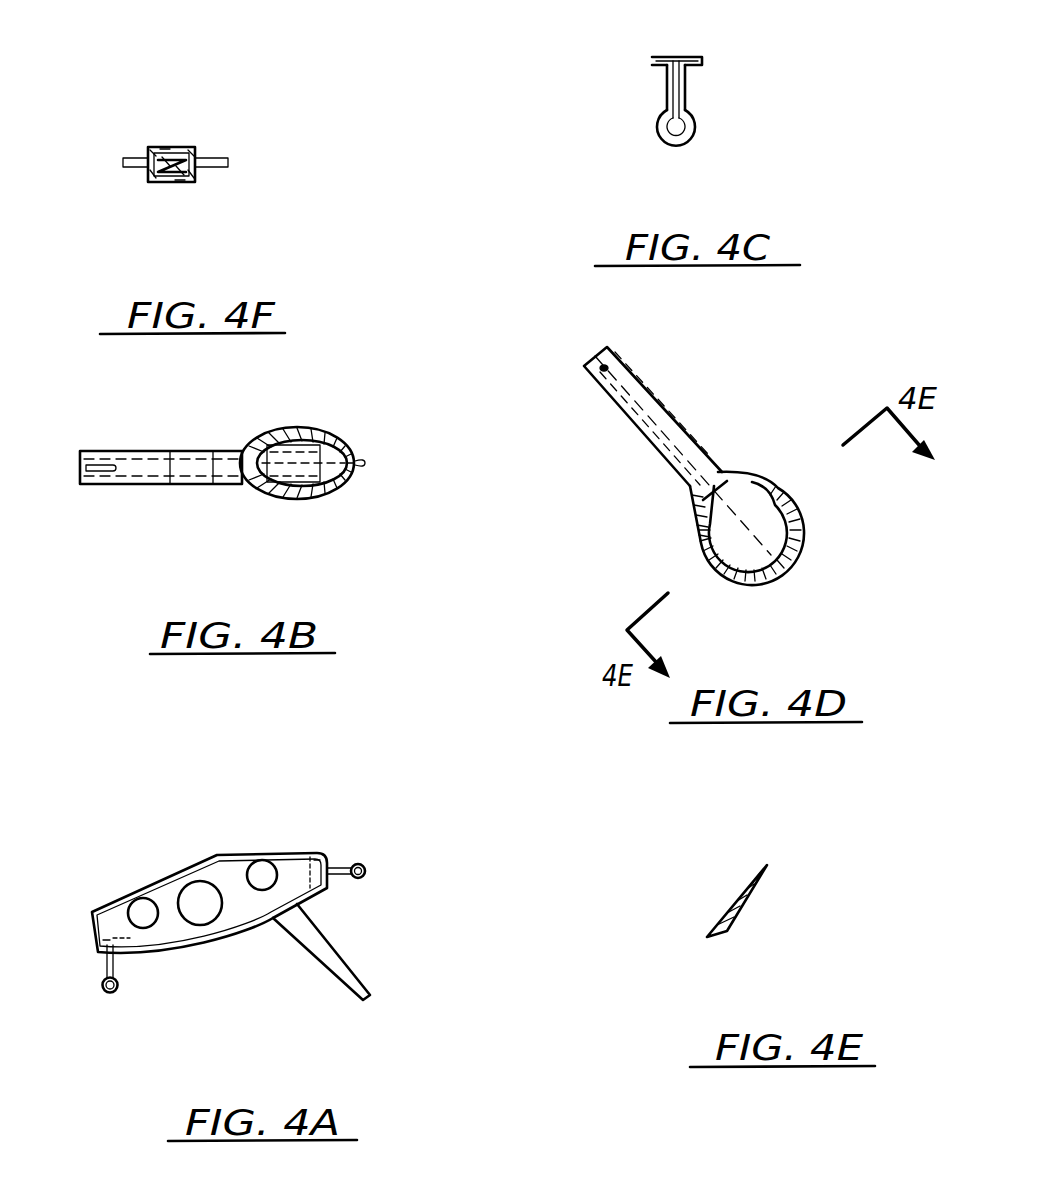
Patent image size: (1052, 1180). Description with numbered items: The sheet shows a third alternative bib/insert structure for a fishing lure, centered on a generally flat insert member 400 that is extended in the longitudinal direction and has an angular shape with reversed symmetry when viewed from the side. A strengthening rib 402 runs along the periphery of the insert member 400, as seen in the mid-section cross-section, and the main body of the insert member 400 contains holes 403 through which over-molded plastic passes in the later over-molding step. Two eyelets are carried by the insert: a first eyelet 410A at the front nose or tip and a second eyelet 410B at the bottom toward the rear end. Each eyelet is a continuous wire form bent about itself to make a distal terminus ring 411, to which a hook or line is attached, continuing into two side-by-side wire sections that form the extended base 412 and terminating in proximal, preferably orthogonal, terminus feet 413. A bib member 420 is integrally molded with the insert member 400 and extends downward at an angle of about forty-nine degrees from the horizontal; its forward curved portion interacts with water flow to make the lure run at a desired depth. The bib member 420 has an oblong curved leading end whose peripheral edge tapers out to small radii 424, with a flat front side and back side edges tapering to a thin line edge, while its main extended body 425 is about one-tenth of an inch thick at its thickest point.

In FIG. 4F, the insert member 400 is at (174, 156).
In FIG. 4D, the insert member 400 is at (715, 444).
In FIG. 4A, the insert member 400 is at (293, 907).
In FIG. 4F, the strengthening rib 402 is at (195, 148).
In FIG. 4A, the strengthening rib 402 is at (283, 855).
In FIG. 4A, the holes 403 is at (265, 880).
In FIG. 4C, the first eyelet 410A is at (656, 89).
In FIG. 4D, the first eyelet 410A is at (718, 526).
In FIG. 4A, the first eyelet 410A is at (367, 875).
In FIG. 4C, the second eyelet 410B is at (734, 89).
In FIG. 4B, the second eyelet 410B is at (103, 470).
In FIG. 4D, the second eyelet 410B is at (643, 422).
In FIG. 4A, the second eyelet 410B is at (101, 992).
In FIG. 4C, the terminus ring 411 is at (686, 141).
In FIG. 4C, the extended base 412 is at (688, 98).
In FIG. 4C, the terminus feet 413 is at (696, 57).
In FIG. 4B, the bib member 420 is at (351, 427).
In FIG. 4D, the bib member 420 is at (760, 523).
In FIG. 4A, the bib member 420 is at (336, 981).
In FIG. 4E, the bib member 420 is at (749, 913).
In FIG. 4B, the small radii 424 is at (350, 450).
In FIG. 4D, the small radii 424 is at (786, 496).
In FIG. 4A, the small radii 424 is at (363, 1000).
In FIG. 4E, the small radii 424 is at (767, 871).
In FIG. 4D, the main extended body 425 is at (778, 540).
In FIG. 4E, the main extended body 425 is at (748, 907).